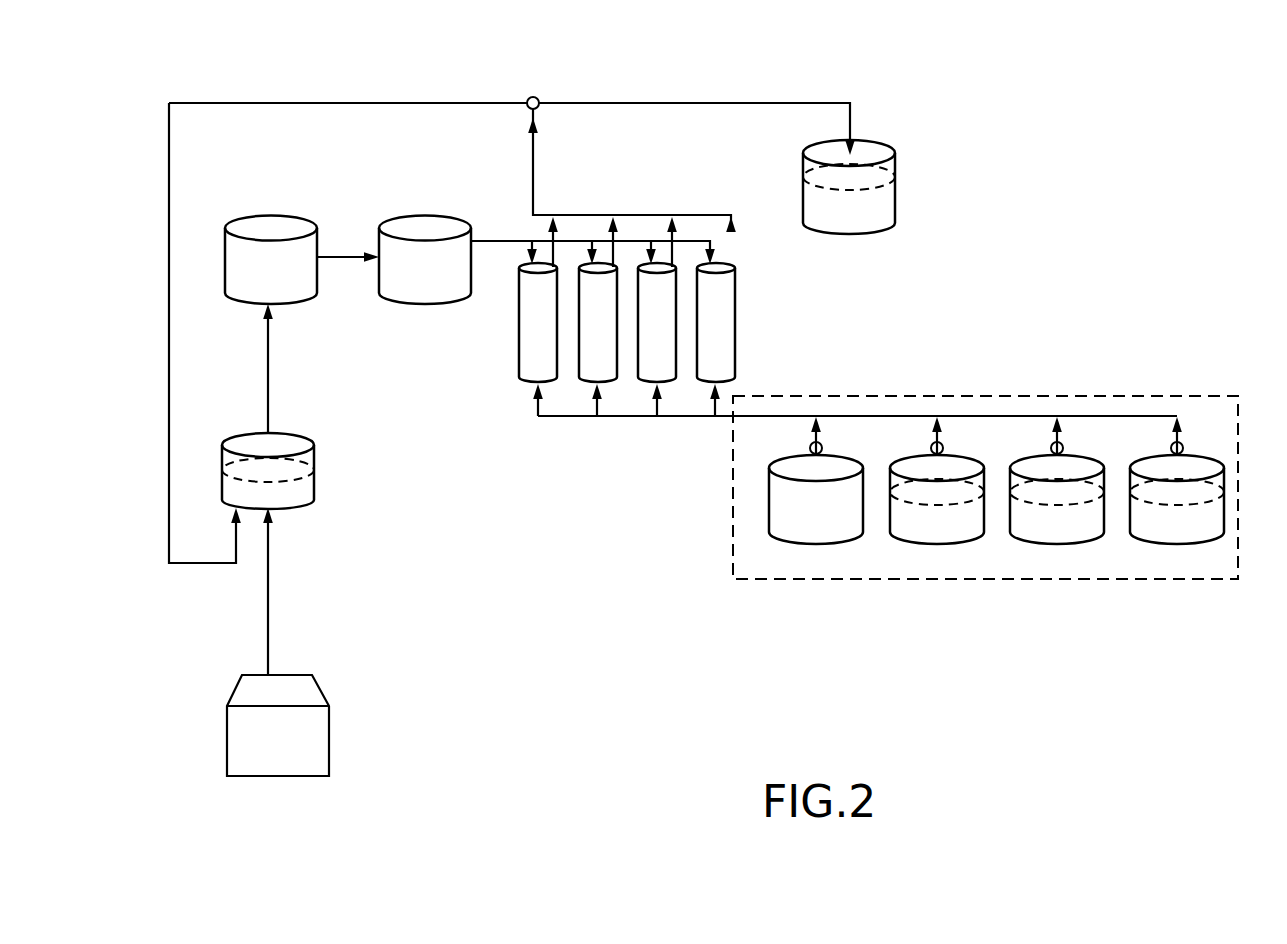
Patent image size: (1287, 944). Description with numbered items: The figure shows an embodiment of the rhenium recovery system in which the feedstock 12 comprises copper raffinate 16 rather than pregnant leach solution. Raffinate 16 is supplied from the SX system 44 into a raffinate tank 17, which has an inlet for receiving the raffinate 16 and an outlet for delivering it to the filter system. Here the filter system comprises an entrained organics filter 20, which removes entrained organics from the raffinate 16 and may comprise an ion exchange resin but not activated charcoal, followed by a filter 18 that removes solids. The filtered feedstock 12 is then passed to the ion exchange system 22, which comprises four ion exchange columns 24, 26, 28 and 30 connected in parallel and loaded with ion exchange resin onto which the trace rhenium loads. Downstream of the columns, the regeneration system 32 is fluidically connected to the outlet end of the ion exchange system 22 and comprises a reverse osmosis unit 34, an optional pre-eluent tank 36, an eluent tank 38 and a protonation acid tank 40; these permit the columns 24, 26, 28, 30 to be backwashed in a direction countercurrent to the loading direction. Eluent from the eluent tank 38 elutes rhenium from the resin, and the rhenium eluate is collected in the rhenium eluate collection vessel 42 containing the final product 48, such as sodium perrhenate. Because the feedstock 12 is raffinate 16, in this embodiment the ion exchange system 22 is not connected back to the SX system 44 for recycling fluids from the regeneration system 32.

The feedstock 12 is at (314, 422).
The raffinate 16 is at (261, 501).
The raffinate tank 17 is at (318, 485).
The filter 18 is at (379, 242).
The entrained organics filter 20 is at (225, 242).
The ion exchange system 22 is at (757, 334).
The ion exchange column 24 is at (527, 335).
The ion exchange column 26 is at (587, 335).
The ion exchange column 28 is at (646, 335).
The ion exchange column 30 is at (705, 335).
The regeneration system 32 is at (1240, 425).
The reverse osmosis unit 34 is at (805, 530).
The pre-eluent tank 36 is at (926, 530).
The eluent tank 38 is at (1046, 530).
The protonation acid tank 40 is at (1166, 530).
The rhenium eluate collection vessel 42 is at (893, 225).
The SX system 44 is at (227, 728).
The final product 48 is at (910, 162).